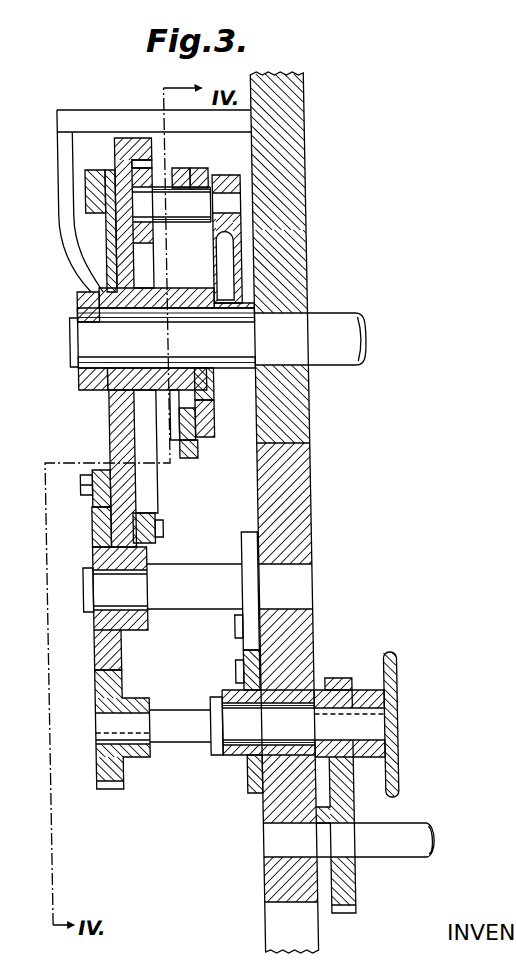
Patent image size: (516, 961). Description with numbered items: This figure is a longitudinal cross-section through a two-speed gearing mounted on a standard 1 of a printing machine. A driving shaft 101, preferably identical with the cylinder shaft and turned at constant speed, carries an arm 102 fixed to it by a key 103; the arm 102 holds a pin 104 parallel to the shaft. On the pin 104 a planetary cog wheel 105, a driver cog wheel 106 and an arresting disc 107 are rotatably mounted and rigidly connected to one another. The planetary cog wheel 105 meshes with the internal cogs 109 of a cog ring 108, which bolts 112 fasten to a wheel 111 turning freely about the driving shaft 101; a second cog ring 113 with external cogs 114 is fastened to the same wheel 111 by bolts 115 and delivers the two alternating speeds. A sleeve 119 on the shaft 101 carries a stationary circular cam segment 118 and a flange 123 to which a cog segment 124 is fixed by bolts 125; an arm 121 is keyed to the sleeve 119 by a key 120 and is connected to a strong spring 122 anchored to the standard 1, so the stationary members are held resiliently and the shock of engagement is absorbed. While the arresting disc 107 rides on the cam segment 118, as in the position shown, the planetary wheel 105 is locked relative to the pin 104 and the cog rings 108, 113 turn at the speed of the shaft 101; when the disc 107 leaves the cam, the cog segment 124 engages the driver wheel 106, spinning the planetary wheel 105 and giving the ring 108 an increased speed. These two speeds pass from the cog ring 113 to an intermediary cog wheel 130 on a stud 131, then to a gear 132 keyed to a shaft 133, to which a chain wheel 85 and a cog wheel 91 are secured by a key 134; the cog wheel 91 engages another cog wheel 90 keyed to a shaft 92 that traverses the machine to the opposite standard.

The standard 1 is at (291, 89).
The chain wheel 85 is at (386, 668).
The cog wheel 90 is at (334, 806).
The cog wheel 91 is at (333, 680).
The shaft 92 is at (401, 829).
The driving shaft 101 is at (296, 327).
The arm 102 is at (290, 238).
The key 103 is at (205, 320).
The pin 104 is at (232, 200).
The planetary cog wheel 105 is at (148, 170).
The driver cog wheel 106 is at (196, 170).
The arresting disc 107 is at (205, 168).
The cog ring 108 is at (141, 138).
The internal cogs 109 is at (148, 158).
The wheel 111 is at (112, 418).
The bolts 112 is at (155, 528).
The cog ring 113 is at (86, 492).
The external cogs 114 is at (87, 518).
The bolts 115 is at (72, 478).
The circular cam segment 118 is at (210, 270).
The sleeve 119 is at (82, 320).
The key 120 is at (74, 380).
The arm 121 is at (62, 234).
The strong spring 122 is at (83, 118).
The flange 123 is at (204, 392).
The cog segment 124 is at (192, 438).
The bolts 125 is at (180, 457).
The intermediary cog wheel 130 is at (84, 552).
The stud 131 is at (178, 576).
The gear 132 is at (84, 694).
The shaft 133 is at (173, 743).
The key 134 is at (386, 718).